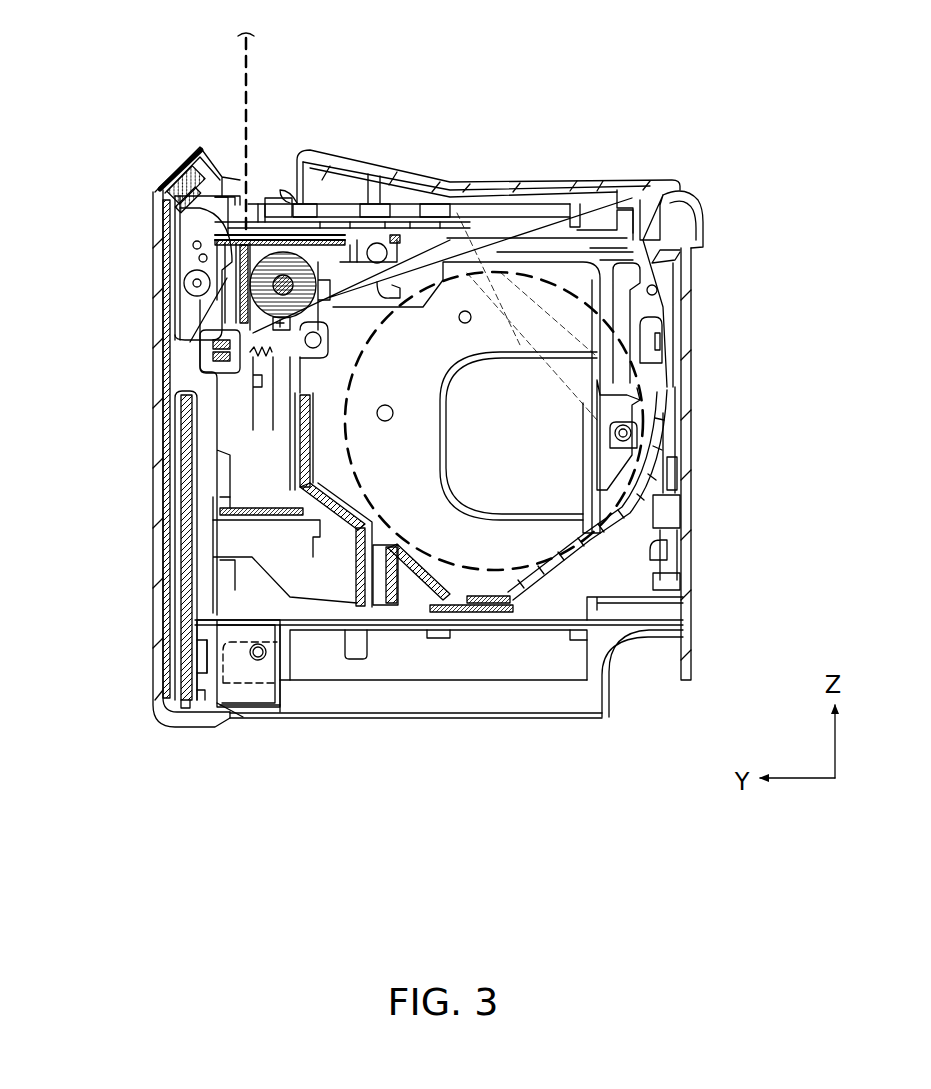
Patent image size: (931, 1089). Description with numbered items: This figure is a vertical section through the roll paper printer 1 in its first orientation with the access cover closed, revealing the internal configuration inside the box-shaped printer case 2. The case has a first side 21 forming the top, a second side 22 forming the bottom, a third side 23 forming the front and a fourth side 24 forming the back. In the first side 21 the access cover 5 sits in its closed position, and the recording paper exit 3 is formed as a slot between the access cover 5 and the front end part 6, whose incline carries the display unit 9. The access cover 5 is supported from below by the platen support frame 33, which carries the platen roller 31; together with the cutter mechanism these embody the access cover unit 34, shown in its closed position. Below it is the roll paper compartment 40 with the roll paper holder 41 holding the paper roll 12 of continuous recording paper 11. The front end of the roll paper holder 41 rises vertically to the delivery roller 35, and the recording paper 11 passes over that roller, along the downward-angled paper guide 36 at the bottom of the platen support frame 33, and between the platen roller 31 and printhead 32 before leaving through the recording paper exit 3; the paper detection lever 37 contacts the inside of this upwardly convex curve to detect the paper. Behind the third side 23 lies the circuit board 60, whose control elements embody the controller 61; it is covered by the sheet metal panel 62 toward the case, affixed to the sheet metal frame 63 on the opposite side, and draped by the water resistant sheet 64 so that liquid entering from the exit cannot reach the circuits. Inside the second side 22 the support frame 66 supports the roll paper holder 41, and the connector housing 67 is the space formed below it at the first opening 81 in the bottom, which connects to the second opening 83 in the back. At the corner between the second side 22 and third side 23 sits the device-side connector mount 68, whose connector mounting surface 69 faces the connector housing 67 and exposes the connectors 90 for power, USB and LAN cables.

The roll paper printer 1 is at (122, 72).
The printer case 2 is at (698, 195).
The recording paper exit 3 is at (257, 178).
The access cover 5 is at (405, 200).
The front end part 6 is at (210, 152).
The display unit 9 is at (172, 154).
The recording paper 11 is at (250, 97).
The paper roll 12 is at (600, 510).
The first side 21 is at (627, 180).
The second side 22 is at (385, 720).
The third side 23 is at (150, 452).
The fourth side 24 is at (693, 623).
The platen roller 31 is at (262, 269).
The printhead 32 is at (272, 324).
The platen support frame 33 is at (467, 240).
The access cover unit 34 is at (385, 165).
The delivery roller 35 is at (343, 235).
The paper guide 36 is at (284, 332).
The paper detection lever 37 is at (283, 382).
The roll paper compartment 40 is at (505, 600).
The roll paper holder 41 is at (480, 595).
The circuit board 60 is at (186, 568).
The controller 61 is at (285, 566).
The sheet metal panel 62 is at (160, 500).
The sheet metal frame 63 is at (190, 645).
The water resistant sheet 64 is at (203, 505).
The support frame 66 is at (537, 627).
The connector housing 67 is at (343, 692).
The device-side connector mount 68 is at (247, 705).
The connector mounting surface 69 is at (283, 698).
The first opening 81 is at (225, 728).
The second opening 83 is at (700, 250).
The connector 90 is at (252, 695).